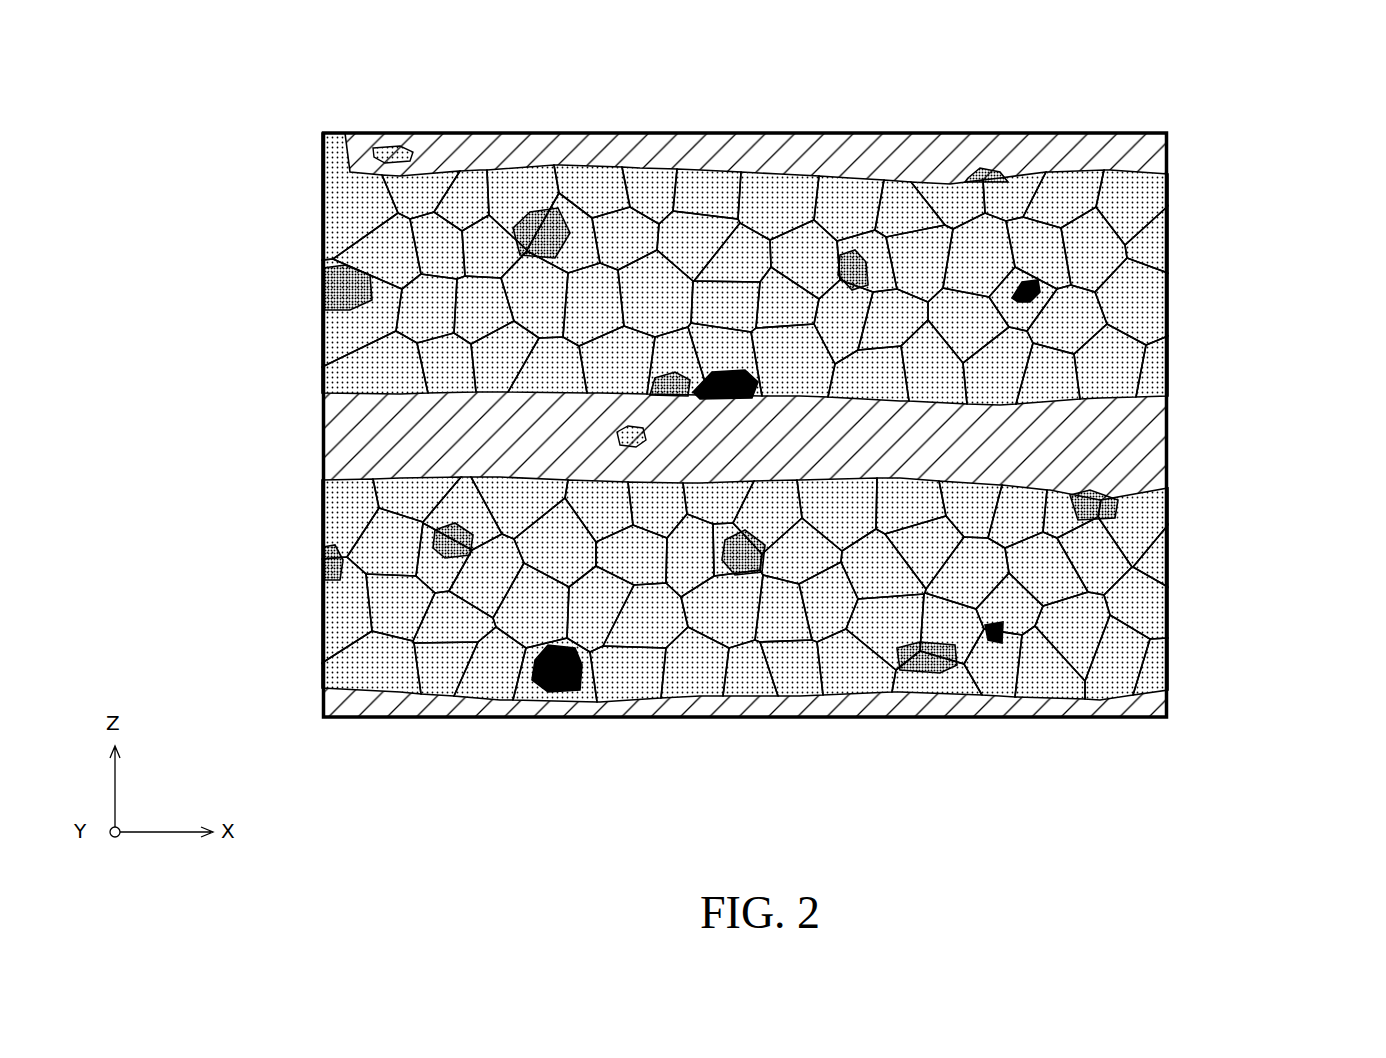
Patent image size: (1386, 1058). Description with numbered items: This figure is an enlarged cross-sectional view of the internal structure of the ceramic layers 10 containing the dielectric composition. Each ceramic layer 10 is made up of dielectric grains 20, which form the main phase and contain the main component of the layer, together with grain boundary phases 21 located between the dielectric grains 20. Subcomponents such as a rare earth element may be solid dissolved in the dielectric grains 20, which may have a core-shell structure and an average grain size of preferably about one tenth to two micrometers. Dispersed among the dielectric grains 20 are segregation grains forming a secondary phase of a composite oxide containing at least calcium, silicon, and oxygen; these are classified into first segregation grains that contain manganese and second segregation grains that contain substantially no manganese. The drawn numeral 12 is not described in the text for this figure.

The ceramic layer 10 is at (1140, 204).
The internal electrode layer 12 is at (1124, 444).
The dielectric grain 20 is at (1105, 556).
The grain boundary phase 21 is at (723, 132).